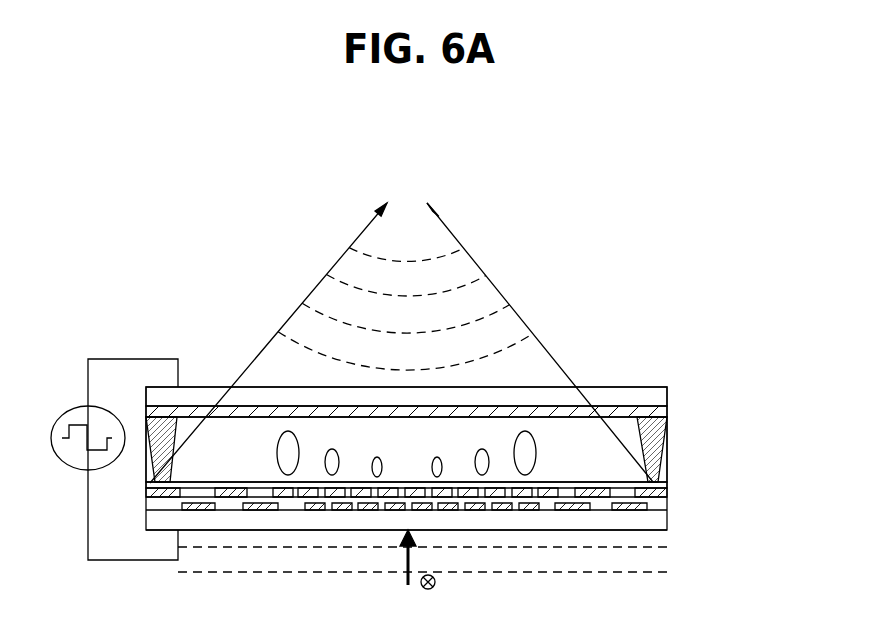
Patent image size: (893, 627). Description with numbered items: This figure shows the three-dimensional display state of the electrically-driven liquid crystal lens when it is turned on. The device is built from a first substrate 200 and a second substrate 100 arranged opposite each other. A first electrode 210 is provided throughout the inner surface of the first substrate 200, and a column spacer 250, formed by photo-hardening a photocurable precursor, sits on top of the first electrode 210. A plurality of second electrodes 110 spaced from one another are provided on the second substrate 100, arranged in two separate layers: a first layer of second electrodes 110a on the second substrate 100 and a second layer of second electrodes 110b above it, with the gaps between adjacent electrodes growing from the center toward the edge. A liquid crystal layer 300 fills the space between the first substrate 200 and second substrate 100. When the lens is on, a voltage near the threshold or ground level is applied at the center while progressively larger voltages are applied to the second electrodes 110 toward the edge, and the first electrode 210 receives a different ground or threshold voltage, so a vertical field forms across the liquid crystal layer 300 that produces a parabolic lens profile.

The second substrate 100 is at (157, 522).
The second electrodes 110 is at (768, 498).
The first layer of second electrodes 110a is at (650, 508).
The second layer of second electrodes 110b is at (650, 491).
The first substrate 200 is at (654, 390).
The first electrode 210 is at (655, 410).
The column spacer 250 is at (652, 478).
The liquid crystal layer 300 is at (616, 451).